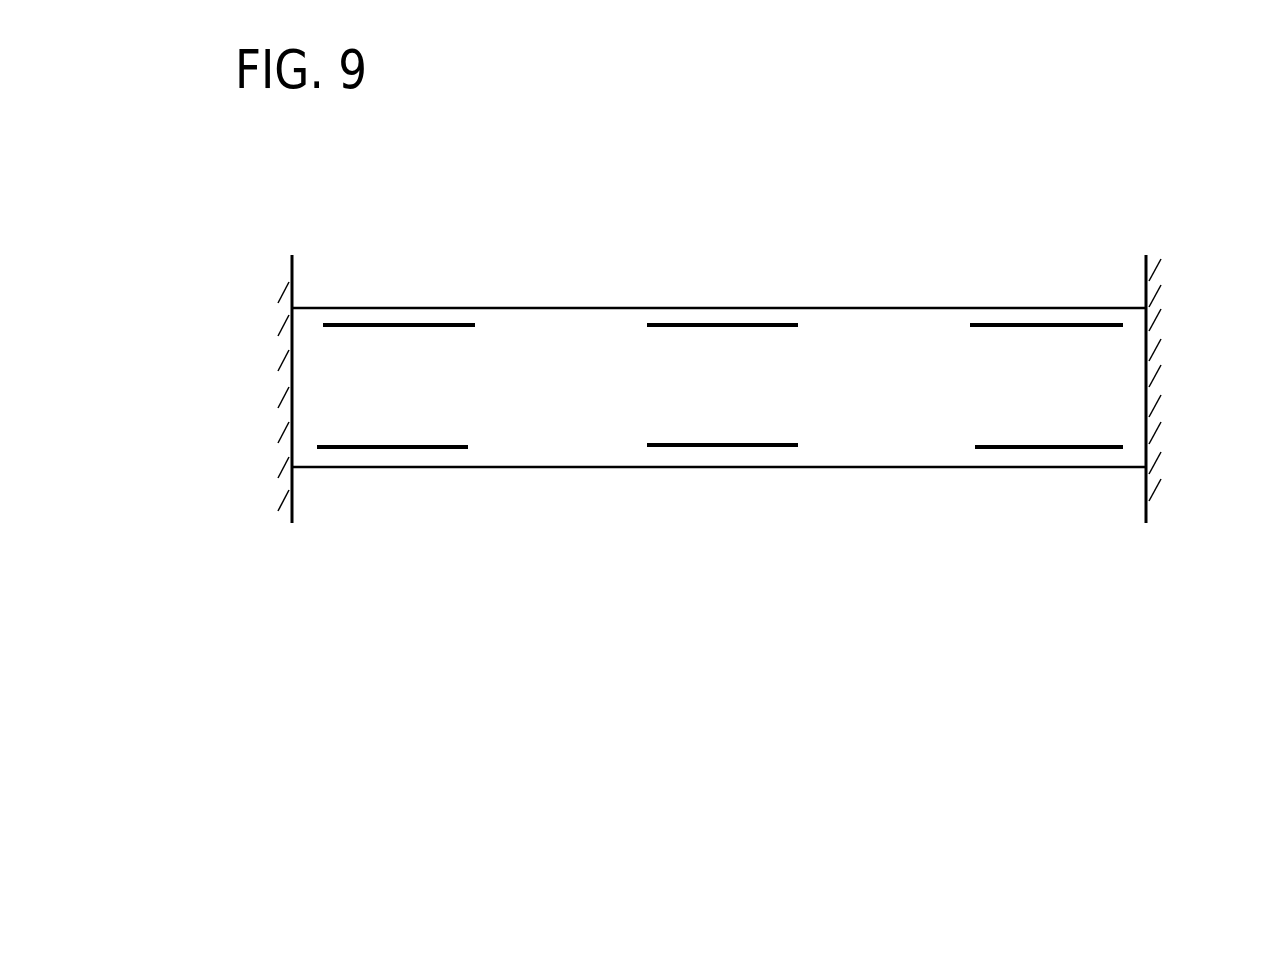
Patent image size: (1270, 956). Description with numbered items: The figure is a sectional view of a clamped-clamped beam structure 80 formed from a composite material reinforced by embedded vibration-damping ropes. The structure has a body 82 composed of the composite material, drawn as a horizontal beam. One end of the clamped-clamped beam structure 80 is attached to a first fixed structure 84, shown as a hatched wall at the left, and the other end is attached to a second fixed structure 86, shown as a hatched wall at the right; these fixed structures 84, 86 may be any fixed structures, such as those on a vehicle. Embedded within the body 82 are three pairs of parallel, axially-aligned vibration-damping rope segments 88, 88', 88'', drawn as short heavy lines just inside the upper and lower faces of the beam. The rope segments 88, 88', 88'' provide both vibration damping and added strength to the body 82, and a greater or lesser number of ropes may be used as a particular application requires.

The clamped-clamped beam structure 80 is at (730, 509).
The body 82 is at (897, 333).
The first fixed structure 84 is at (290, 438).
The second fixed structure 86 is at (1155, 410).
The vibration-damping rope segments 88 is at (426, 401).
The vibration-damping rope segments 88' is at (746, 388).
The vibration-damping rope segments 88'' is at (1080, 376).